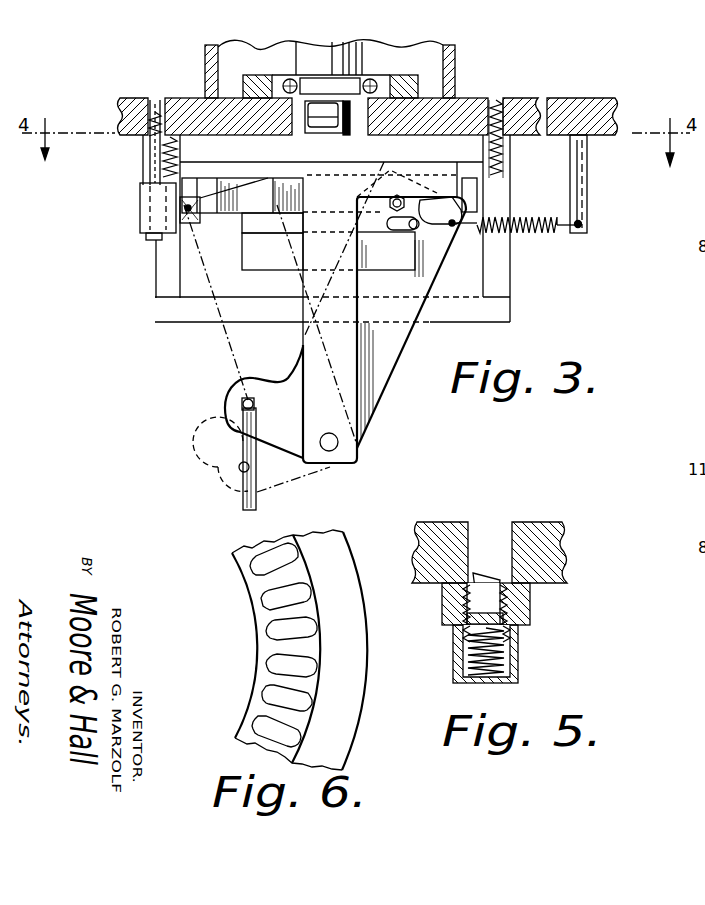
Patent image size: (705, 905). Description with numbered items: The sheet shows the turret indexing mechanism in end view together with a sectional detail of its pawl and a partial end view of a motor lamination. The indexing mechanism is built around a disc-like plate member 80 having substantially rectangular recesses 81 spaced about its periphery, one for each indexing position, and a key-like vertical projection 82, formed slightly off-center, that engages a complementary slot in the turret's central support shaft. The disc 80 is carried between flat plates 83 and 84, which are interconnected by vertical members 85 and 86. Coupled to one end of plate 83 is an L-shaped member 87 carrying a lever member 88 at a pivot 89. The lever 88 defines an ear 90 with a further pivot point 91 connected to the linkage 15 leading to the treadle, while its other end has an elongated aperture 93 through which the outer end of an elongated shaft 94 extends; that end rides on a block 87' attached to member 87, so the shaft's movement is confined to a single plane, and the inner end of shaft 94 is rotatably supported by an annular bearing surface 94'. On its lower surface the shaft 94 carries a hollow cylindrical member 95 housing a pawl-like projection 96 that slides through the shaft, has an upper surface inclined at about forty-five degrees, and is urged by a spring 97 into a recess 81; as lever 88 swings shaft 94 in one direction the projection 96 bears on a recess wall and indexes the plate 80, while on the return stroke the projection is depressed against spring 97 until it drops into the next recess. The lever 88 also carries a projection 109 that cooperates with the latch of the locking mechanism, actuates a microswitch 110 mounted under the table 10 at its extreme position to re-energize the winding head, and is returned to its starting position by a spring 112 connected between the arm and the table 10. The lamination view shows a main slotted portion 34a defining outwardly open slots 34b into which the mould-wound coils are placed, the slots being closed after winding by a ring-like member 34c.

In FIG. 3, the table 10 is at (542, 94).
In FIG. 3, the linkage 15 is at (243, 497).
In FIG. 6, the main slotted portion 34a is at (263, 617).
In FIG. 6, the outwardly open slots 34b is at (303, 595).
In FIG. 6, the ring-like member 34c is at (352, 667).
In FIG. 3, the disc-like plate member 80 is at (238, 206).
In FIG. 5, the disc-like plate member 80 is at (535, 522).
In FIG. 3, the recesses 81 is at (204, 198).
In FIG. 5, the recesses 81 is at (477, 523).
In FIG. 3, the key-like vertical projection 82 is at (345, 123).
In FIG. 3, the flat plate 83 is at (473, 150).
In FIG. 3, the flat plate 84 is at (503, 312).
In FIG. 3, the vertical member 85 is at (503, 255).
In FIG. 3, the vertical member 86 is at (160, 258).
In FIG. 3, the L-shaped member 87 is at (384, 330).
In FIG. 3, the block 87' is at (324, 303).
In FIG. 3, the lever member 88 is at (404, 333).
In FIG. 3, the pivot 89 is at (338, 442).
In FIG. 3, the ear 90 is at (232, 392).
In FIG. 3, the pivot point 91 is at (246, 405).
In FIG. 3, the elongated aperture 93 is at (444, 258).
In FIG. 3, the elongated shaft 94 is at (448, 194).
In FIG. 5, the elongated shaft 94 is at (522, 621).
In FIG. 3, the annular bearing surface 94' is at (272, 241).
In FIG. 5, the cylindrical member 95 is at (518, 643).
In FIG. 5, the pawl-like projection 96 is at (532, 595).
In FIG. 5, the spring 97 is at (512, 667).
In FIG. 3, the projection 109 is at (390, 197).
In FIG. 3, the microswitch 110 is at (167, 197).
In FIG. 3, the spring 112 is at (551, 212).